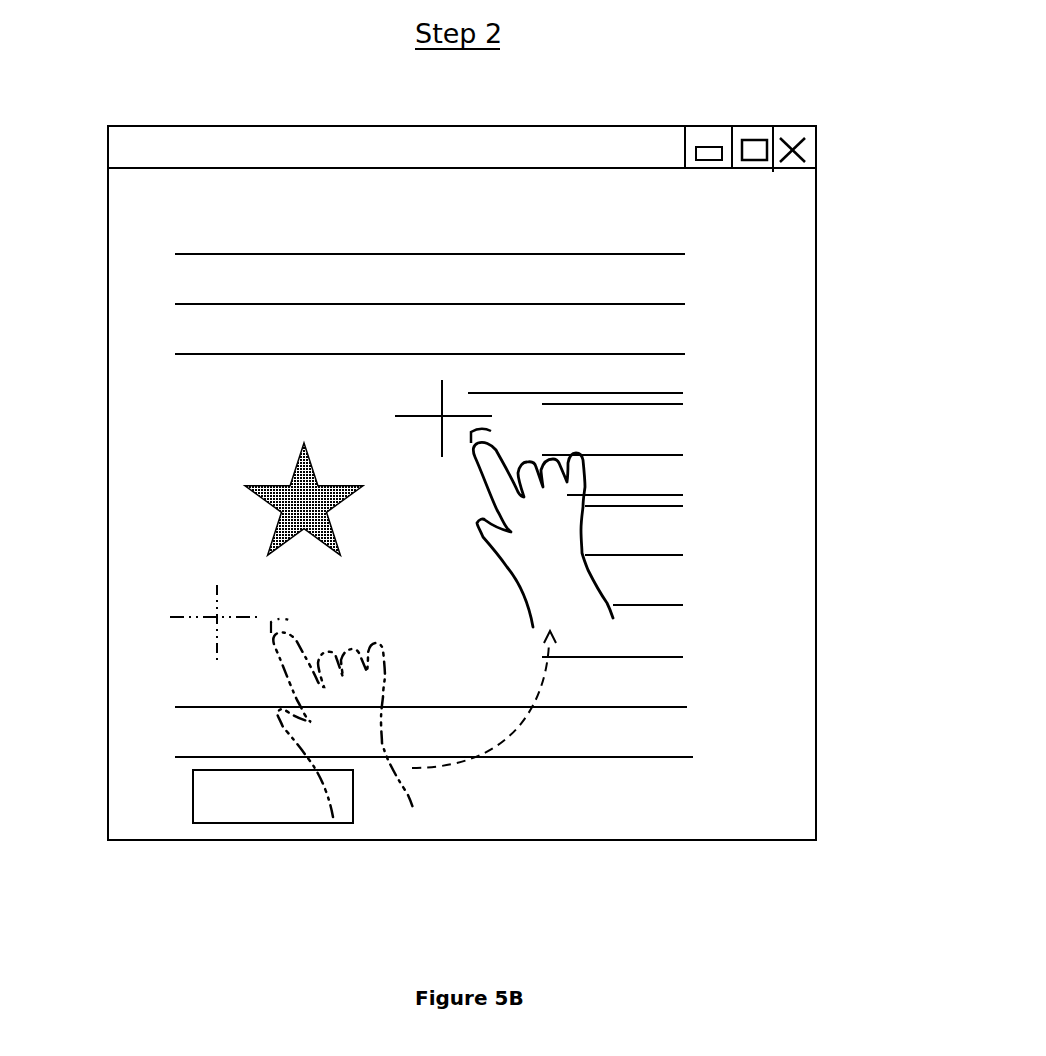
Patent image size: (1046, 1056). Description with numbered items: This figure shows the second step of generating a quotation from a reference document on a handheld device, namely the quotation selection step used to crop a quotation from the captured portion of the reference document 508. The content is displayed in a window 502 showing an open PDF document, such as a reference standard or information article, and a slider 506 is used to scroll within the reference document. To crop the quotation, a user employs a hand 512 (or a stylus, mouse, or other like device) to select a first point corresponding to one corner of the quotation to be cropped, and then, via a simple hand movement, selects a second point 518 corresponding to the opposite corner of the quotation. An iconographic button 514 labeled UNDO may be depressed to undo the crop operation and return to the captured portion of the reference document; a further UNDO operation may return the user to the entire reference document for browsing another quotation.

The window 502 is at (486, 460).
The slider 506 is at (210, 597).
The illustrative image 508 is at (207, 444).
The hand 512 is at (683, 495).
The iconographic button 514 is at (238, 823).
The second point 518 is at (683, 393).